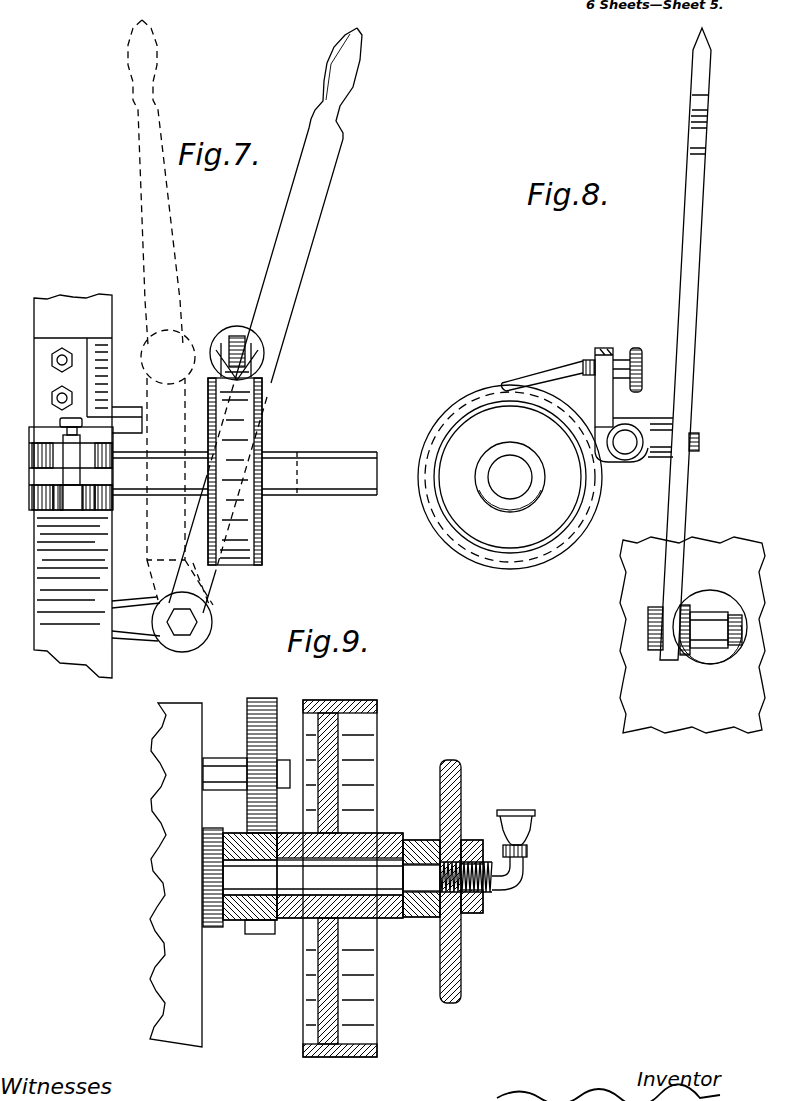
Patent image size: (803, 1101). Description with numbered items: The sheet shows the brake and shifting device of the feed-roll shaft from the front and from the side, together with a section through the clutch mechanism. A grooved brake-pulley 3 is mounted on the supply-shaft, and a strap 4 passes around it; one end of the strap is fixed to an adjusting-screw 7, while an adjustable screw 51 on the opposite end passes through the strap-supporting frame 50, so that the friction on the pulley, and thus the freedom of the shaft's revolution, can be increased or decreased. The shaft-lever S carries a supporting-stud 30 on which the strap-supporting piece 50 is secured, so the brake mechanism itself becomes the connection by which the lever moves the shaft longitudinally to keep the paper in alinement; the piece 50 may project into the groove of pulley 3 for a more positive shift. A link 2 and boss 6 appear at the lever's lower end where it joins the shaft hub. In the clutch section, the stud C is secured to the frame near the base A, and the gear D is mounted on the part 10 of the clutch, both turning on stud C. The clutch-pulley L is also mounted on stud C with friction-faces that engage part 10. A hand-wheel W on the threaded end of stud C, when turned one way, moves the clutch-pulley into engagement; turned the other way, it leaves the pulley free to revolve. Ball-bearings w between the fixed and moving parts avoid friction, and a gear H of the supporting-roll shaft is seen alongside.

In FIG. 7, the shaft-lever S is at (257, 340).
In FIG. 8, the shaft-lever S is at (692, 184).
In FIG. 7, the adjusting-screw 7 is at (237, 332).
In FIG. 8, the adjusting-screw 7 is at (645, 365).
In FIG. 7, the grooved pulley 3 is at (262, 438).
In FIG. 8, the grooved pulley 3 is at (510, 479).
In FIG. 7, the link / hub bolt 2 is at (136, 619).
In FIG. 8, the link / hub bolt 2 is at (707, 650).
In FIG. 8, the adjustable screw 51 is at (583, 362).
In FIG. 8, the strap 4 is at (545, 375).
In FIG. 8, the strap-supporting frame 50 is at (613, 403).
In FIG. 8, the supporting-stud 30 is at (661, 418).
In FIG. 8, the boss ring 6 is at (627, 450).
In FIG. 9, the gear H is at (270, 700).
In FIG. 9, the base A is at (176, 875).
In FIG. 9, the stud C is at (369, 868).
In FIG. 9, the gear D is at (255, 925).
In FIG. 9, the clutch part 10 is at (302, 935).
In FIG. 9, the clutch-pulley L is at (340, 878).
In FIG. 9, the hand-wheel W is at (462, 935).
In FIG. 9, the ball-bearings w is at (233, 920).